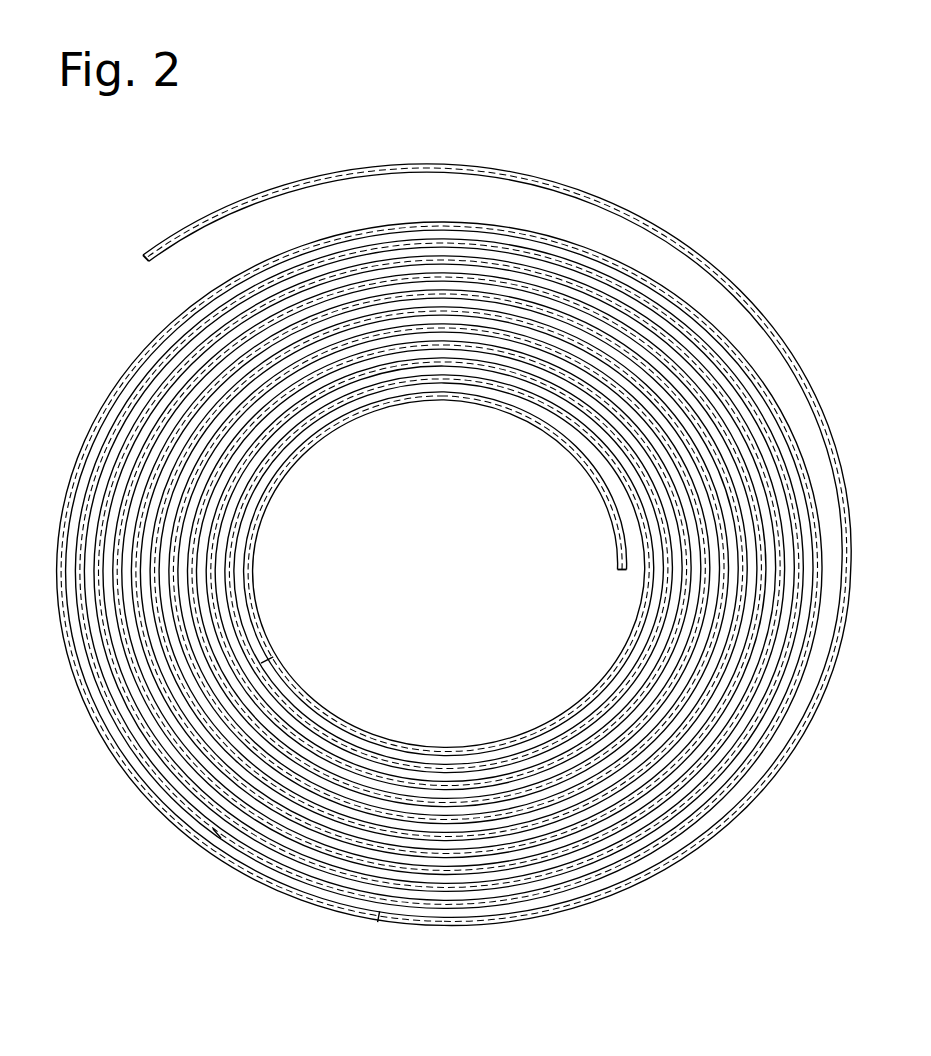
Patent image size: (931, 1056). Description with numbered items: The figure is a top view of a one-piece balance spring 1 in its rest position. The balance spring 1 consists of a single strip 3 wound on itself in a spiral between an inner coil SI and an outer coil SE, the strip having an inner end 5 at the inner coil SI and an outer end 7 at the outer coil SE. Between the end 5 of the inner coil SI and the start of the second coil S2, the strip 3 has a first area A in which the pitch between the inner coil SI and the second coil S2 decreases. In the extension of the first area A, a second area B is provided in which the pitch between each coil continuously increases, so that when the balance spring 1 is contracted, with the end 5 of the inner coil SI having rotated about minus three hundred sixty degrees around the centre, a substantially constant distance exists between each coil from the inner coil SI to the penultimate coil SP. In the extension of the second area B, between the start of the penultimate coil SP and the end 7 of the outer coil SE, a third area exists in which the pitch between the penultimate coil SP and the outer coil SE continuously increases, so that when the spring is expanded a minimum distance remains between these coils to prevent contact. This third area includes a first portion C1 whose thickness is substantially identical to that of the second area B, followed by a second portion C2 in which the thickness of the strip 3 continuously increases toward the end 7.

The balance spring 1 is at (810, 190).
The strip 3 is at (217, 834).
The end of inner coil 5 is at (621, 588).
The end of outer coil 7 is at (129, 272).
The first area A is at (322, 434).
The second area B is at (503, 745).
The first portion of third area C1 is at (560, 919).
The second portion of third area C2 is at (451, 164).
The outer coil SE is at (563, 186).
The inner coil SI is at (541, 431).
The penultimate coil SP is at (78, 463).
The second coil S2 is at (621, 479).